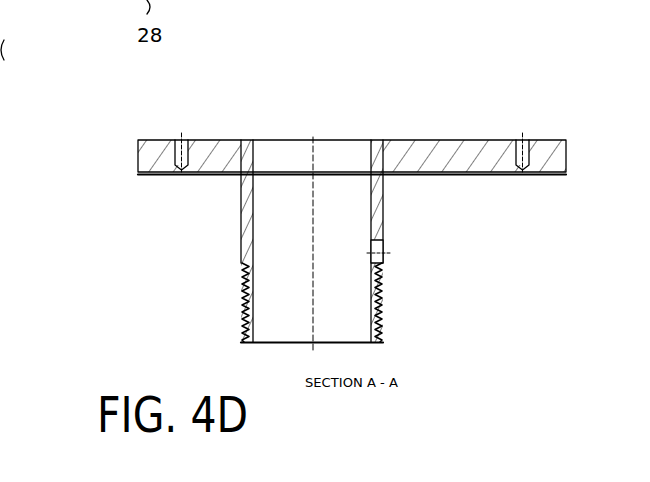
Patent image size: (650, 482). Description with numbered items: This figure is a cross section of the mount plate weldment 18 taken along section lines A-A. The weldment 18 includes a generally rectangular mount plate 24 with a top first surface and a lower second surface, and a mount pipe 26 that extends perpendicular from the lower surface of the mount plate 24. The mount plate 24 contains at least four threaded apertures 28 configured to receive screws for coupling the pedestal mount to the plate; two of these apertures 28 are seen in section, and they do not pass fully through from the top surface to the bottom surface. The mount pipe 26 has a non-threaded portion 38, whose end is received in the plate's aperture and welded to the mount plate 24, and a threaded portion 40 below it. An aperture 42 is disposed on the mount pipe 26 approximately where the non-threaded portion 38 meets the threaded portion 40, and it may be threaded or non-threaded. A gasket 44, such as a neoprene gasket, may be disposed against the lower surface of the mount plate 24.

The mount plate weldment 18 is at (388, 80).
The mount plate 24 is at (138, 152).
The mount pipe 26 is at (385, 203).
The threaded apertures 28 is at (181, 140).
The non-threaded portion 38 is at (241, 198).
The threaded portion 40 is at (382, 318).
The aperture 42 is at (380, 260).
The gasket 44 is at (541, 176).